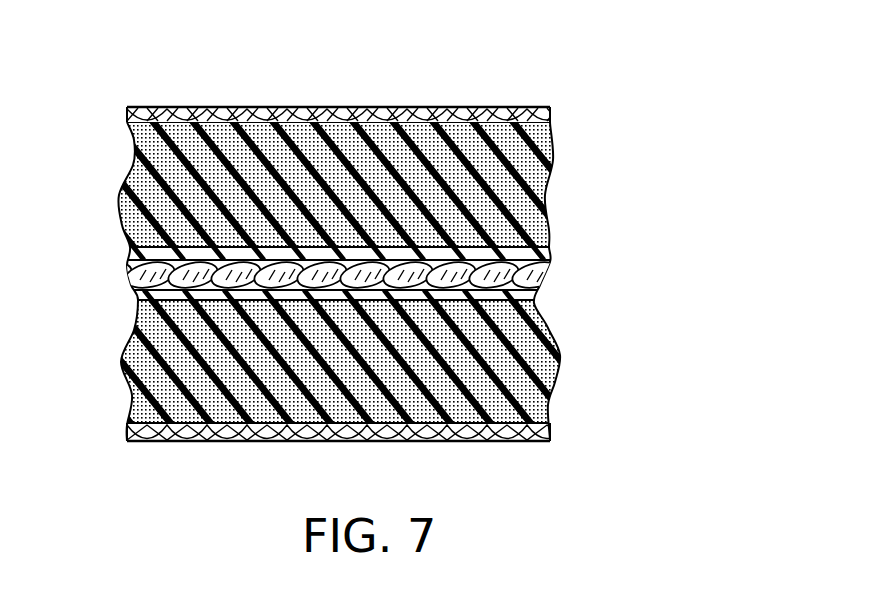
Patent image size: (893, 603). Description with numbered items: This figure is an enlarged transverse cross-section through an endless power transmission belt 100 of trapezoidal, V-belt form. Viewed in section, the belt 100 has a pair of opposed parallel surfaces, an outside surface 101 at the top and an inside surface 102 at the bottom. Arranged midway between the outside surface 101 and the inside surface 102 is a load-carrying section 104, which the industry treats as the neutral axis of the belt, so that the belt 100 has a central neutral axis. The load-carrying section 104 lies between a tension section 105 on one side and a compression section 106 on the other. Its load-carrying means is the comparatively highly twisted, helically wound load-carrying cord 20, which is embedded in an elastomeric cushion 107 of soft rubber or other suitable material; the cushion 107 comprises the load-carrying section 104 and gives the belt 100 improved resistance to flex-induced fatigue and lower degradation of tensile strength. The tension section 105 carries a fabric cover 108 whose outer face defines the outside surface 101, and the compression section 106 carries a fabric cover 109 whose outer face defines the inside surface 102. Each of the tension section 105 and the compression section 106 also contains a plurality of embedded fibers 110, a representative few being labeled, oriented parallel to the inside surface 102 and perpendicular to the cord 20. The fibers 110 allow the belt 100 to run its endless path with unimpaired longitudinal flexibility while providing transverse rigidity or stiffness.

The belt 100 is at (532, 52).
The outside surface 101 is at (452, 442).
The inside surface 102 is at (330, 107).
The load-carrying section 104 is at (553, 273).
The tension section 105 is at (557, 168).
The compression section 106 is at (560, 372).
The elastomeric cushion 107 is at (520, 300).
The fabric cover 108 is at (187, 107).
The fabric cover 109 is at (240, 442).
The fibers 110 is at (190, 212).
The load-carrying cord 20 is at (513, 264).